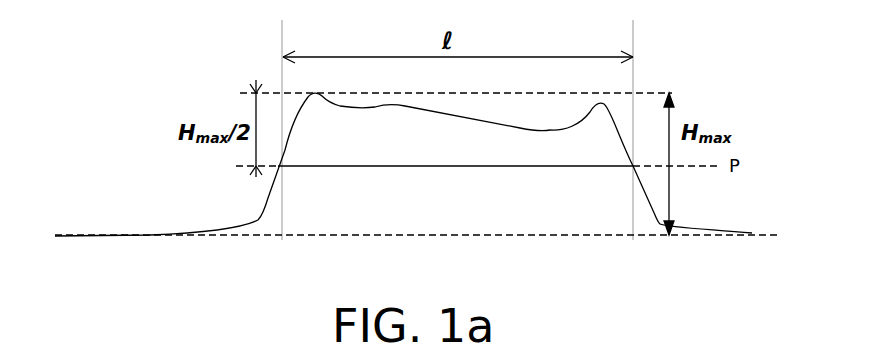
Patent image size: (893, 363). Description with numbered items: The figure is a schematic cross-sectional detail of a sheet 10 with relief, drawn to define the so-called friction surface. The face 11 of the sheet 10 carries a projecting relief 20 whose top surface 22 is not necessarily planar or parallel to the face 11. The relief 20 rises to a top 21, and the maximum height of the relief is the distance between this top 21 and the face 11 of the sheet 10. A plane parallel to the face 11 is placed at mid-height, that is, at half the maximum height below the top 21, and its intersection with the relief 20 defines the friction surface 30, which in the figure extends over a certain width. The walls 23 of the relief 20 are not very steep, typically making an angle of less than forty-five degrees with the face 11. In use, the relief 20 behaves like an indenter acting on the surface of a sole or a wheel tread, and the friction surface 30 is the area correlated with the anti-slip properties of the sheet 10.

The sheet 10 is at (429, 274).
The face of the sheet 11 is at (115, 238).
The relief 20 is at (431, 209).
The top of the relief 21 is at (318, 93).
The top surface of the relief 22 is at (586, 94).
The walls of the relief 23 is at (266, 197).
The friction surface 30 is at (398, 166).